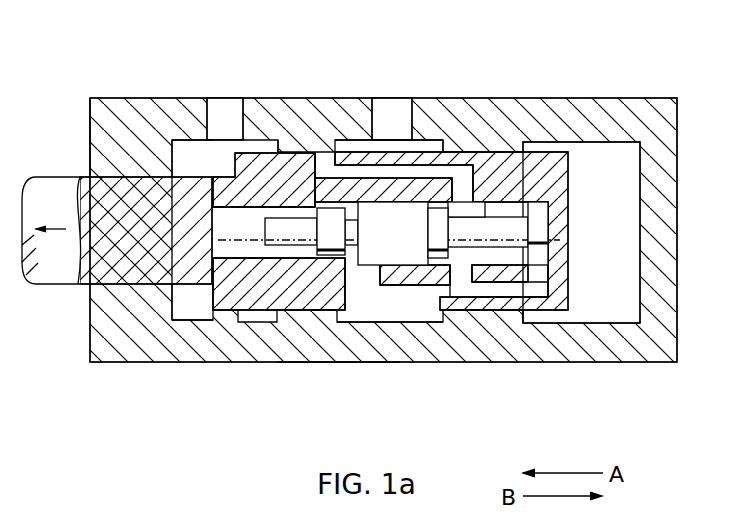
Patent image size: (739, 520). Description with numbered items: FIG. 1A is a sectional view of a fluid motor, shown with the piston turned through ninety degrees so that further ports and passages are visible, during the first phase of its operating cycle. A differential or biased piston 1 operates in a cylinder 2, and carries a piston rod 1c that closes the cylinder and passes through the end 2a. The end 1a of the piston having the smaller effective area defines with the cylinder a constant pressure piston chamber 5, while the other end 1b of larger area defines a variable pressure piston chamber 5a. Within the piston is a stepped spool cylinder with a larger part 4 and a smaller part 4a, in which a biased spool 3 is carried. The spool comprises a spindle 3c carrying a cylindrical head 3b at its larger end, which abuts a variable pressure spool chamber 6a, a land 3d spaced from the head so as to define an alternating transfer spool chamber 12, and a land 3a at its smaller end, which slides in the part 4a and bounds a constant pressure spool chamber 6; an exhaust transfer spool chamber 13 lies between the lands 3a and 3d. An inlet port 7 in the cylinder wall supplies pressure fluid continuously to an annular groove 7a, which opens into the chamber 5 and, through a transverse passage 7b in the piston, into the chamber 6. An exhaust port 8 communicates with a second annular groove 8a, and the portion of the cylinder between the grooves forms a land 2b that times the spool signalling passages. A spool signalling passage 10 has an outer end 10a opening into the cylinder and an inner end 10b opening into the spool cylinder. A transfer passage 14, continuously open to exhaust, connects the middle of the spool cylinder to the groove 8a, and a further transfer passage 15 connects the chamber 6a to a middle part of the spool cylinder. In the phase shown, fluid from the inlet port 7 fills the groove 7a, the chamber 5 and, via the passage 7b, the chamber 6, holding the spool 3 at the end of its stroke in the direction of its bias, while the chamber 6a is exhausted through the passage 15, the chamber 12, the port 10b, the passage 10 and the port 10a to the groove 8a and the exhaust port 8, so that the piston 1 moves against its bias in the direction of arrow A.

The piston 1 is at (310, 287).
The piston end 1a is at (238, 293).
The piston end 1b is at (563, 230).
The piston rod 1c is at (97, 190).
The cylinder 2 is at (498, 343).
The cylinder end 2a is at (105, 124).
The land 2b is at (328, 315).
The spool 3 is at (297, 263).
The land 3a is at (339, 240).
The cylindrical head 3b is at (525, 212).
The spindle 3c is at (393, 233).
The land 3d is at (438, 233).
The spool cylinder part 4 is at (410, 205).
The spool cylinder part 4a is at (255, 208).
The constant pressure piston chamber 5 is at (170, 162).
The variable pressure piston chamber 5a is at (592, 155).
The constant pressure spool chamber 6 is at (210, 297).
The variable pressure spool chamber 6a is at (538, 257).
The inlet port 7 is at (220, 113).
The annular groove 7a is at (253, 147).
The transverse passage 7b is at (223, 185).
The exhaust port 8 is at (391, 38).
The annular groove 8a is at (430, 147).
The spool signalling passage 10 is at (350, 173).
The outer end 10a is at (318, 160).
The inner end 10b is at (462, 185).
The alternating transfer spool chamber 12 is at (463, 257).
The exhaust transfer spool chamber 13 is at (372, 260).
The transfer passage 14 is at (403, 297).
The transfer passage 15 is at (512, 298).